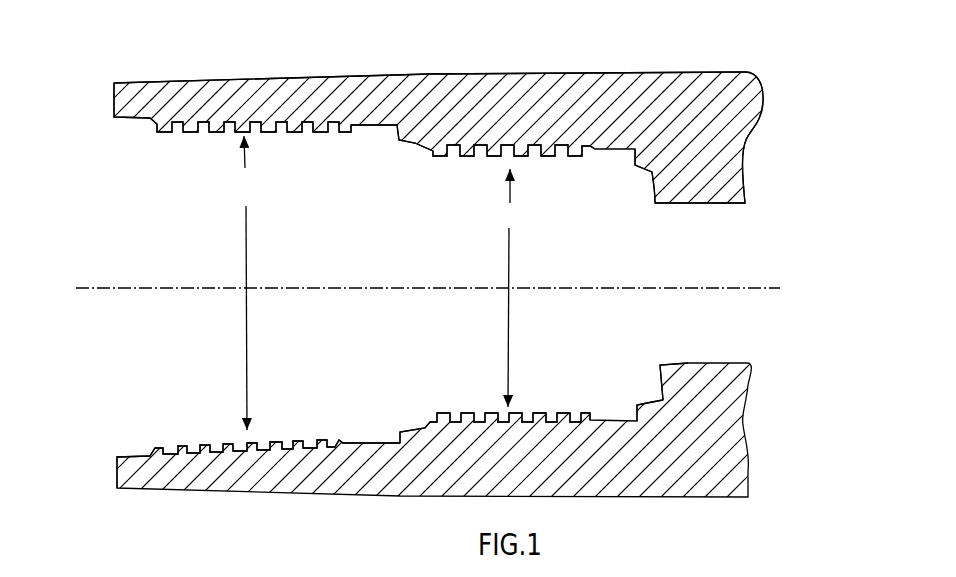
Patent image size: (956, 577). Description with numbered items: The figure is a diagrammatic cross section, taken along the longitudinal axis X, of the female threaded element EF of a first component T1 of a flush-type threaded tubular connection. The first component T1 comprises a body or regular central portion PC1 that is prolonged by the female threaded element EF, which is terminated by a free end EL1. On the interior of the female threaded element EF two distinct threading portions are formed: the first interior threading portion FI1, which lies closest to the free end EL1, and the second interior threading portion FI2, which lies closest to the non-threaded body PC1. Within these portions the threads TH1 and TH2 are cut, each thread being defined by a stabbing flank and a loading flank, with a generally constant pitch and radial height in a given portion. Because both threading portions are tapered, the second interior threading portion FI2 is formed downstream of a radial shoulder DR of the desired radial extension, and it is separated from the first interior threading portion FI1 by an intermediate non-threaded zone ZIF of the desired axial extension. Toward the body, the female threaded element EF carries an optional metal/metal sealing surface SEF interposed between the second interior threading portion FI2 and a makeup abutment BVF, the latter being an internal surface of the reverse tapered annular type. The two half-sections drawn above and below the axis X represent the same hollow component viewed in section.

The first component T1 is at (782, 73).
The female threaded element EF is at (452, 73).
The body PC1 is at (748, 136).
The free end EL1 is at (112, 100).
The threads of first threading portion TH1 is at (213, 132).
The threads of second threading portion TH2 is at (441, 156).
The first interior threading portion FI1 is at (245, 283).
The second interior threading portion FI2 is at (507, 288).
The intermediate non-threaded zone ZIF is at (372, 443).
The radial shoulder DR is at (393, 143).
The metal/metal sealing surface SEF is at (648, 403).
The makeup abutment BVF is at (661, 372).
The longitudinal axis X is at (425, 288).